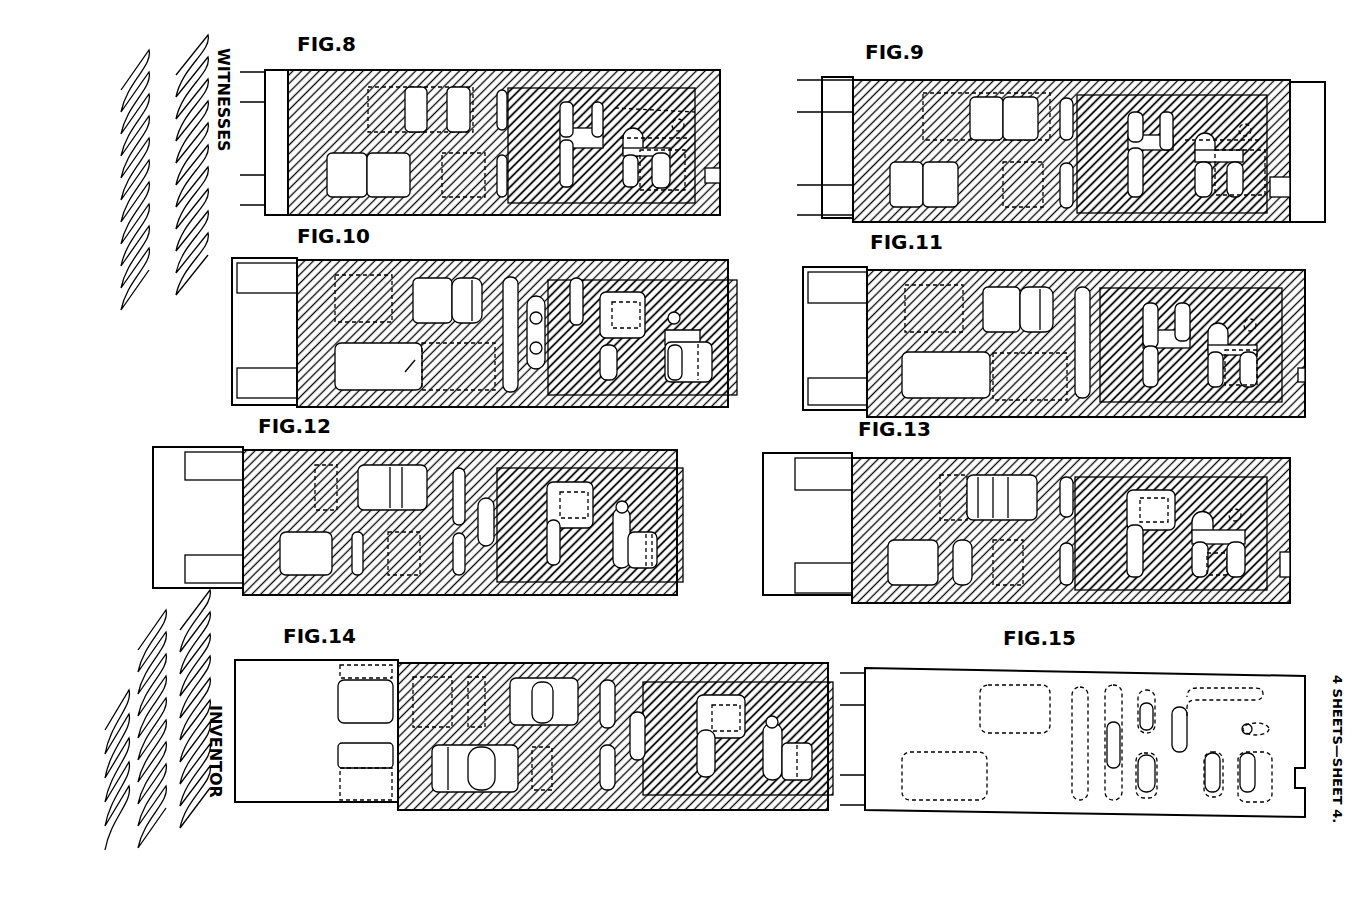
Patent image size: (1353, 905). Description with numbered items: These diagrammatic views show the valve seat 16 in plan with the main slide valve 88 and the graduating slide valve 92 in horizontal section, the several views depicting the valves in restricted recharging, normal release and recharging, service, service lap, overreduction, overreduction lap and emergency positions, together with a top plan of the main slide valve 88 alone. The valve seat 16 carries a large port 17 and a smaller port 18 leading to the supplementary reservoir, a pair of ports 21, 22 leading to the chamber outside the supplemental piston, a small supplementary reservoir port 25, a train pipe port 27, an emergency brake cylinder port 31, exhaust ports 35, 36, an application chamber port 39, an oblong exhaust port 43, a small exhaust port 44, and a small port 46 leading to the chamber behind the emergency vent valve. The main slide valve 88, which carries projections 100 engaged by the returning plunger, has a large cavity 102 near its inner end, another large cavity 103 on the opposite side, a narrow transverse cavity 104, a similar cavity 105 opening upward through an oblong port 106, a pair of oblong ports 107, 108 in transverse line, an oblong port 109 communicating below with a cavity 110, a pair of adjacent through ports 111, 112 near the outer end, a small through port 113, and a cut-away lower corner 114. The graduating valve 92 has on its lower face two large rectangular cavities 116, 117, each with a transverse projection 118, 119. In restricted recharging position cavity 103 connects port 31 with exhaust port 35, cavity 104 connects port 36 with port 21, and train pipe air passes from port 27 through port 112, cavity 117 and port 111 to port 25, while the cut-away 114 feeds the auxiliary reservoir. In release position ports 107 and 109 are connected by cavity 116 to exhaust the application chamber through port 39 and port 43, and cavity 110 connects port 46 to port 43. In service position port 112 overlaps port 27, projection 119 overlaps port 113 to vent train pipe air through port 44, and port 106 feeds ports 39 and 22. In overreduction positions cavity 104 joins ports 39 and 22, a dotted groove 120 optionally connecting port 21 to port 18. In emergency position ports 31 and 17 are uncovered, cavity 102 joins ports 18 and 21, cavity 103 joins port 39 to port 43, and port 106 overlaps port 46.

In FIG. 8, the valve seat 16 is at (275, 70).
In FIG. 9, the valve seat 16 is at (837, 147).
In FIG. 11, the valve seat 16 is at (835, 338).
In FIG. 13, the valve seat 16 is at (807, 524).
In FIG. 8, the large port 17 is at (388, 175).
In FIG. 9, the large port 17 is at (940, 184).
In FIG. 10, the large port 17 is at (378, 366).
In FIG. 11, the large port 17 is at (946, 375).
In FIG. 12, the large port 17 is at (306, 553).
In FIG. 13, the large port 17 is at (913, 562).
In FIG. 14, the large port 17 is at (365, 771).
In FIG. 8, the smaller port 18 is at (462, 204).
In FIG. 9, the smaller port 18 is at (1012, 208).
In FIG. 10, the smaller port 18 is at (418, 395).
In FIG. 11, the smaller port 18 is at (1015, 405).
In FIG. 12, the smaller port 18 is at (358, 578).
In FIG. 13, the smaller port 18 is at (965, 588).
In FIG. 14, the smaller port 18 is at (442, 792).
In FIG. 8, the port 21 is at (505, 198).
In FIG. 9, the port 21 is at (1066, 210).
In FIG. 10, the port 21 is at (466, 395).
In FIG. 11, the port 21 is at (1050, 400).
In FIG. 12, the port 21 is at (415, 578).
In FIG. 13, the port 21 is at (1010, 590).
In FIG. 14, the port 21 is at (481, 768).
In FIG. 8, the port 22 is at (588, 204).
In FIG. 9, the port 22 is at (1132, 205).
In FIG. 10, the port 22 is at (642, 337).
In FIG. 11, the port 22 is at (1112, 405).
In FIG. 12, the port 22 is at (465, 580).
In FIG. 13, the port 22 is at (1062, 590).
In FIG. 14, the port 22 is at (542, 795).
In FIG. 8, the small port 25 is at (646, 190).
In FIG. 11, the small port 25 is at (1192, 405).
In FIG. 12, the small port 25 is at (548, 582).
In FIG. 13, the small port 25 is at (1152, 592).
In FIG. 14, the small port 25 is at (608, 792).
In FIG. 8, the port 27 is at (705, 158).
In FIG. 9, the port 27 is at (1270, 205).
In FIG. 10, the port 27 is at (670, 385).
In FIG. 11, the port 27 is at (1270, 366).
In FIG. 12, the port 27 is at (603, 582).
In FIG. 13, the port 27 is at (1205, 585).
In FIG. 14, the port 27 is at (652, 796).
In FIG. 8, the port 31 is at (416, 109).
In FIG. 9, the port 31 is at (986, 118).
In FIG. 10, the port 31 is at (380, 275).
In FIG. 11, the port 31 is at (938, 276).
In FIG. 12, the port 31 is at (265, 494).
In FIG. 13, the port 31 is at (918, 470).
In FIG. 14, the port 31 is at (365, 694).
In FIG. 8, the relatively large port 35 is at (458, 109).
In FIG. 9, the relatively large port 35 is at (1020, 118).
In FIG. 10, the relatively large port 35 is at (432, 300).
In FIG. 11, the relatively large port 35 is at (1001, 309).
In FIG. 12, the relatively large port 35 is at (365, 466).
In FIG. 13, the relatively large port 35 is at (975, 475).
In FIG. 14, the relatively large port 35 is at (440, 678).
In FIG. 8, the smaller port 36 is at (506, 90).
In FIG. 9, the smaller port 36 is at (1068, 98).
In FIG. 10, the smaller port 36 is at (473, 278).
In FIG. 11, the smaller port 36 is at (1046, 290).
In FIG. 12, the smaller port 36 is at (404, 465).
In FIG. 13, the smaller port 36 is at (1002, 475).
In FIG. 14, the smaller port 36 is at (478, 678).
In FIG. 9, the port 39 is at (1100, 100).
In FIG. 10, the port 39 is at (540, 300).
In FIG. 12, the port 39 is at (484, 498).
In FIG. 13, the port 39 is at (1088, 480).
In FIG. 14, the port 39 is at (542, 702).
In FIG. 8, the oblong port 43 is at (705, 108).
In FIG. 14, the oblong port 43 is at (578, 690).
In FIG. 8, the small circuit port 44 is at (685, 124).
In FIG. 9, the small circuit port 44 is at (1265, 135).
In FIG. 12, the small circuit port 44 is at (625, 505).
In FIG. 13, the small circuit port 44 is at (1245, 515).
In FIG. 8, the small port 46 is at (688, 100).
In FIG. 9, the small port 46 is at (1245, 100).
In FIG. 11, the small port 46 is at (1228, 290).
In FIG. 12, the small port 46 is at (590, 470).
In FIG. 13, the small port 46 is at (1180, 480).
In FIG. 14, the small port 46 is at (637, 708).
In FIG. 8, the main slide valve 88 is at (288, 116).
In FIG. 12, the main slide valve 88 is at (250, 520).
In FIG. 13, the main slide valve 88 is at (852, 522).
In FIG. 14, the main slide valve 88 is at (400, 736).
In FIG. 15, the main slide valve 88 is at (918, 668).
In FIG. 8, the graduating slide valve 92 is at (712, 78).
In FIG. 9, the graduating slide valve 92 is at (1089, 151).
In FIG. 10, the graduating slide valve 92 is at (738, 385).
In FIG. 11, the graduating slide valve 92 is at (1296, 272).
In FIG. 12, the graduating slide valve 92 is at (684, 486).
In FIG. 13, the graduating slide valve 92 is at (1290, 478).
In FIG. 14, the graduating slide valve 92 is at (833, 735).
In FIG. 8, the projections 100 is at (250, 178).
In FIG. 9, the projections 100 is at (825, 147).
In FIG. 10, the projections 100 is at (264, 331).
In FIG. 11, the projections 100 is at (837, 338).
In FIG. 12, the projections 100 is at (198, 517).
In FIG. 13, the projections 100 is at (823, 578).
In FIG. 14, the projections 100 is at (362, 802).
In FIG. 8, the large cavity 102 is at (347, 175).
In FIG. 9, the large cavity 102 is at (906, 184).
In FIG. 10, the large cavity 102 is at (399, 372).
In FIG. 11, the large cavity 102 is at (975, 400).
In FIG. 12, the large cavity 102 is at (342, 575).
In FIG. 13, the large cavity 102 is at (942, 588).
In FIG. 14, the large cavity 102 is at (462, 792).
In FIG. 15, the large cavity 102 is at (944, 776).
In FIG. 8, the large cavity 103 is at (420, 87).
In FIG. 9, the large cavity 103 is at (993, 97).
In FIG. 10, the large cavity 103 is at (400, 400).
In FIG. 11, the large cavity 103 is at (1030, 288).
In FIG. 12, the large cavity 103 is at (385, 465).
In FIG. 13, the large cavity 103 is at (1023, 499).
In FIG. 14, the large cavity 103 is at (525, 690).
In FIG. 15, the large cavity 103 is at (1015, 709).
In FIG. 8, the narrow transverse cavity 104 is at (500, 100).
In FIG. 9, the narrow transverse cavity 104 is at (1064, 200).
In FIG. 10, the narrow transverse cavity 104 is at (509, 395).
In FIG. 11, the narrow transverse cavity 104 is at (1083, 287).
In FIG. 12, the narrow transverse cavity 104 is at (460, 468).
In FIG. 13, the narrow transverse cavity 104 is at (1066, 477).
In FIG. 14, the narrow transverse cavity 104 is at (606, 682).
In FIG. 15, the narrow transverse cavity 104 is at (1075, 735).
In FIG. 8, the narrow transverse cavity 105 is at (533, 105).
In FIG. 12, the narrow transverse cavity 105 is at (497, 475).
In FIG. 13, the narrow transverse cavity 105 is at (1105, 592).
In FIG. 15, the narrow transverse cavity 105 is at (1115, 700).
In FIG. 8, the oblong port 106 is at (535, 175).
In FIG. 9, the oblong port 106 is at (1102, 175).
In FIG. 10, the oblong port 106 is at (540, 385).
In FIG. 11, the oblong port 106 is at (1125, 405).
In FIG. 13, the oblong port 106 is at (1128, 470).
In FIG. 14, the oblong port 106 is at (642, 720).
In FIG. 15, the oblong port 106 is at (1113, 750).
In FIG. 8, the oblong port 107 is at (566, 104).
In FIG. 9, the oblong port 107 is at (1136, 112).
In FIG. 10, the oblong port 107 is at (578, 278).
In FIG. 11, the oblong port 107 is at (1150, 303).
In FIG. 12, the oblong port 107 is at (537, 468).
In FIG. 13, the oblong port 107 is at (1138, 490).
In FIG. 15, the oblong port 107 is at (1150, 712).
In FIG. 8, the oblong port 108 is at (566, 190).
In FIG. 9, the oblong port 108 is at (1135, 172).
In FIG. 10, the oblong port 108 is at (605, 385).
In FIG. 11, the oblong port 108 is at (1152, 392).
In FIG. 12, the oblong port 108 is at (512, 582).
In FIG. 13, the oblong port 108 is at (1135, 582).
In FIG. 15, the oblong port 108 is at (1153, 770).
In FIG. 8, the oblong port 109 is at (614, 95).
In FIG. 9, the oblong port 109 is at (1178, 112).
In FIG. 10, the oblong port 109 is at (618, 292).
In FIG. 11, the oblong port 109 is at (1182, 303).
In FIG. 12, the oblong port 109 is at (560, 482).
In FIG. 13, the oblong port 109 is at (1165, 490).
In FIG. 14, the oblong port 109 is at (704, 695).
In FIG. 15, the oblong port 109 is at (1185, 730).
In FIG. 8, the cavity 110 is at (652, 90).
In FIG. 13, the cavity 110 is at (1228, 478).
In FIG. 15, the cavity 110 is at (1225, 692).
In FIG. 8, the oblong port 111 is at (632, 190).
In FIG. 9, the oblong port 111 is at (1200, 195).
In FIG. 10, the oblong port 111 is at (640, 385).
In FIG. 11, the oblong port 111 is at (1218, 390).
In FIG. 13, the oblong port 111 is at (1212, 582).
In FIG. 15, the oblong port 111 is at (1210, 775).
In FIG. 8, the oblong port 112 is at (662, 192).
In FIG. 9, the oblong port 112 is at (1236, 195).
In FIG. 10, the oblong port 112 is at (680, 385).
In FIG. 11, the oblong port 112 is at (1250, 392).
In FIG. 12, the oblong port 112 is at (622, 575).
In FIG. 13, the oblong port 112 is at (1238, 580).
In FIG. 14, the oblong port 112 is at (792, 782).
In FIG. 15, the oblong port 112 is at (1250, 760).
In FIG. 8, the small port 113 is at (700, 138).
In FIG. 9, the small port 113 is at (1270, 150).
In FIG. 10, the small port 113 is at (682, 318).
In FIG. 11, the small port 113 is at (1258, 325).
In FIG. 12, the small port 113 is at (635, 508).
In FIG. 13, the small port 113 is at (1270, 503).
In FIG. 14, the small port 113 is at (772, 716).
In FIG. 15, the small port 113 is at (1252, 725).
In FIG. 8, the cut-away portion 114 is at (720, 176).
In FIG. 9, the cut-away portion 114 is at (1290, 182).
In FIG. 12, the cut-away portion 114 is at (660, 552).
In FIG. 13, the cut-away portion 114 is at (1290, 565).
In FIG. 15, the cut-away portion 114 is at (1298, 788).
In FIG. 8, the rectangular cavity 116 is at (597, 104).
In FIG. 9, the rectangular cavity 116 is at (1159, 131).
In FIG. 10, the rectangular cavity 116 is at (642, 292).
In FIG. 12, the rectangular cavity 116 is at (608, 470).
In FIG. 14, the rectangular cavity 116 is at (720, 700).
In FIG. 12, the rectangular cavity 117 is at (682, 582).
In FIG. 14, the rectangular cavity 117 is at (833, 762).
In FIG. 9, the transversely extending projection 118 is at (1152, 175).
In FIG. 12, the transversely extending projection 118 is at (555, 568).
In FIG. 14, the transversely extending projection 118 is at (707, 753).
In FIG. 8, the transversely extending projection 119 is at (634, 140).
In FIG. 9, the transversely extending projection 119 is at (1208, 135).
In FIG. 10, the transversely extending projection 119 is at (702, 340).
In FIG. 11, the transversely extending projection 119 is at (1230, 338).
In FIG. 13, the transversely extending projection 119 is at (1215, 528).
In FIG. 14, the transversely extending projection 119 is at (790, 706).
In FIG. 12, the small groove 120 is at (392, 580).